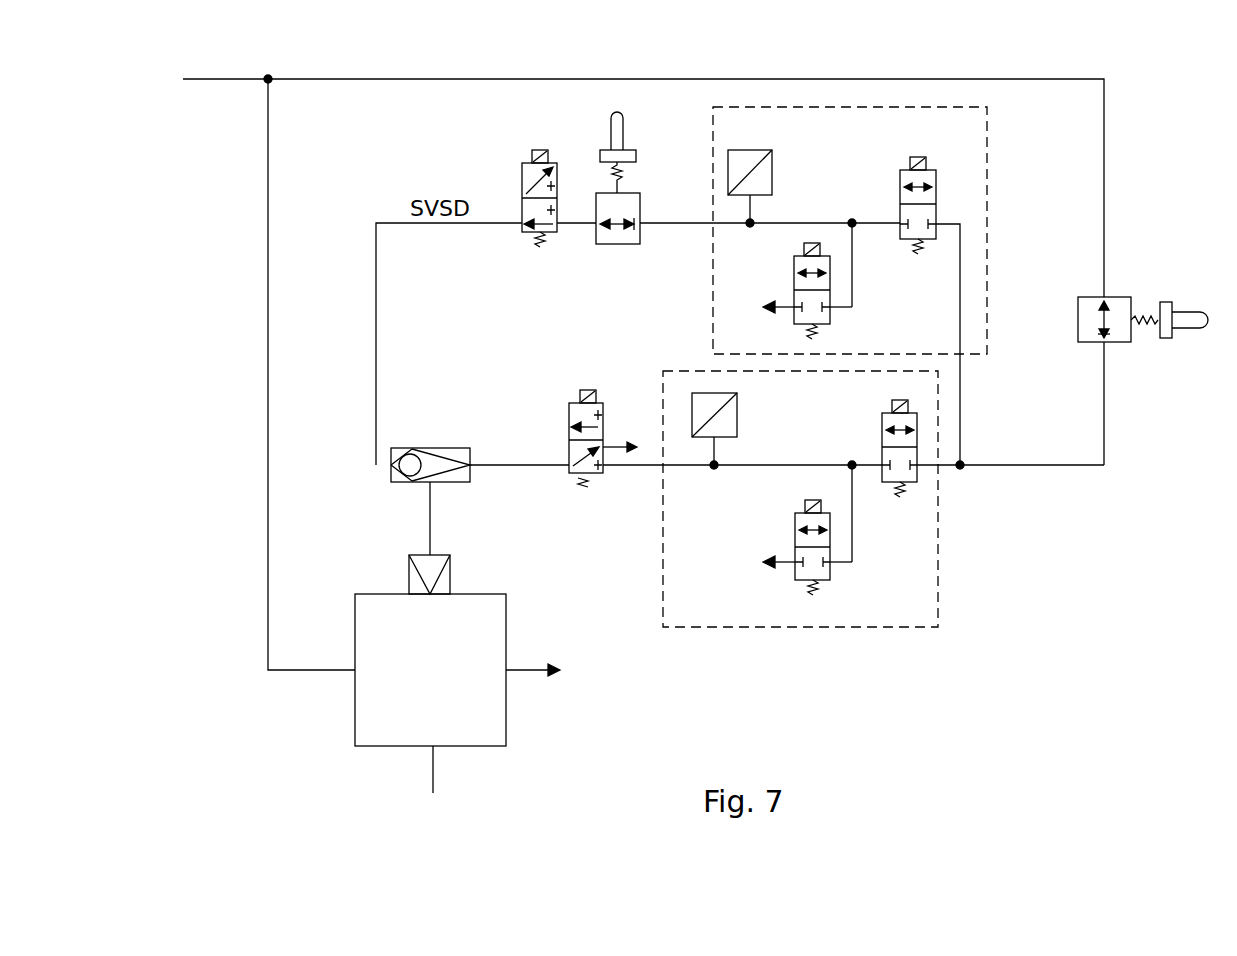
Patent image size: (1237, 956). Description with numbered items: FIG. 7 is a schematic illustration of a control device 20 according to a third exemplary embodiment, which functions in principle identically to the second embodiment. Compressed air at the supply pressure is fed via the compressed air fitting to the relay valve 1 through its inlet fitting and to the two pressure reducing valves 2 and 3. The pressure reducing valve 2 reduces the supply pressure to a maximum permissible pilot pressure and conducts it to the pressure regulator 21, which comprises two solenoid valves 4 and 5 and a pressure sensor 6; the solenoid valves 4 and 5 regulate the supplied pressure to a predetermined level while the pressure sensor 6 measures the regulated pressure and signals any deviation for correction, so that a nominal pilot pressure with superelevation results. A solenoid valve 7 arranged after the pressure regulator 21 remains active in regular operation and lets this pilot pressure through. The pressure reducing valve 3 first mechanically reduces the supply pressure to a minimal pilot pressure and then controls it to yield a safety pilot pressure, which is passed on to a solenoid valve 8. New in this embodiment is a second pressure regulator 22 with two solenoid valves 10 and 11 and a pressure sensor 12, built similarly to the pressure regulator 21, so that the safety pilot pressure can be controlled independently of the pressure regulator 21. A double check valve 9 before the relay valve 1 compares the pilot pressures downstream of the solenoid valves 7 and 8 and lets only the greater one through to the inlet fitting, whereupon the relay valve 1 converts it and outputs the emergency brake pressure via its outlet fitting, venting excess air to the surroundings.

The relay valve 1 is at (506, 718).
The pressure reducing valve 2 is at (1108, 297).
The pressure reducing valve 3 is at (640, 205).
The solenoid valve 4 is at (908, 484).
The solenoid valve 5 is at (830, 575).
The pressure sensor 6 is at (702, 392).
The solenoid valve 7 is at (600, 475).
The solenoid valve 8 is at (522, 178).
The double check valve 9 is at (443, 448).
The solenoid valve 10 is at (936, 183).
The solenoid valve 11 is at (830, 318).
The pressure sensor 12 is at (772, 178).
The control device 20 is at (1118, 150).
The pressure regulator 21 is at (938, 600).
The pressure regulator 22 is at (987, 172).